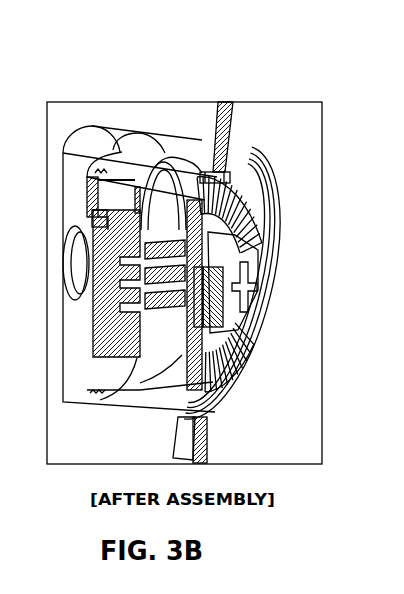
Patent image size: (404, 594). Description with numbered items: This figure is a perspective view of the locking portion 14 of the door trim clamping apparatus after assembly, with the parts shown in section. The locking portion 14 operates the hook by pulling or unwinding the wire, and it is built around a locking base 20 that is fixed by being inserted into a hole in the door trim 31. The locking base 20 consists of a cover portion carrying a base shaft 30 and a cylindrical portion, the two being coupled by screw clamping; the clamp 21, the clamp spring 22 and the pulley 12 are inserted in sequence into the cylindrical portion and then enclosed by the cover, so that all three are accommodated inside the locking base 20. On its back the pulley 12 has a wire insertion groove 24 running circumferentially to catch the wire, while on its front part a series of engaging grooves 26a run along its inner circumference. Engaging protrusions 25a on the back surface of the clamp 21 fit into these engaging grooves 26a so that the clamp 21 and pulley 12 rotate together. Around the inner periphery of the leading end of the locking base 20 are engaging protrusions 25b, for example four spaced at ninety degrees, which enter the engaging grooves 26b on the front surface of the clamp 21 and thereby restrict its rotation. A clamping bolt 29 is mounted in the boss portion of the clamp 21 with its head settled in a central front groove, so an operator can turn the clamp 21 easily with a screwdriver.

The pulley 12 is at (122, 190).
The locking portion 14 is at (148, 121).
The locking base 20 is at (72, 177).
The clamp 21 is at (200, 145).
The clamp spring 22 is at (162, 162).
The wire insertion groove 24 is at (90, 222).
The engaging protrusion 25a is at (182, 160).
The engaging protrusion 25b is at (282, 192).
The engaging groove 26a is at (88, 256).
The engaging groove 26b is at (282, 222).
The clamping bolt 29 is at (280, 322).
The base shaft 30 is at (66, 296).
The door trim 31 is at (262, 415).